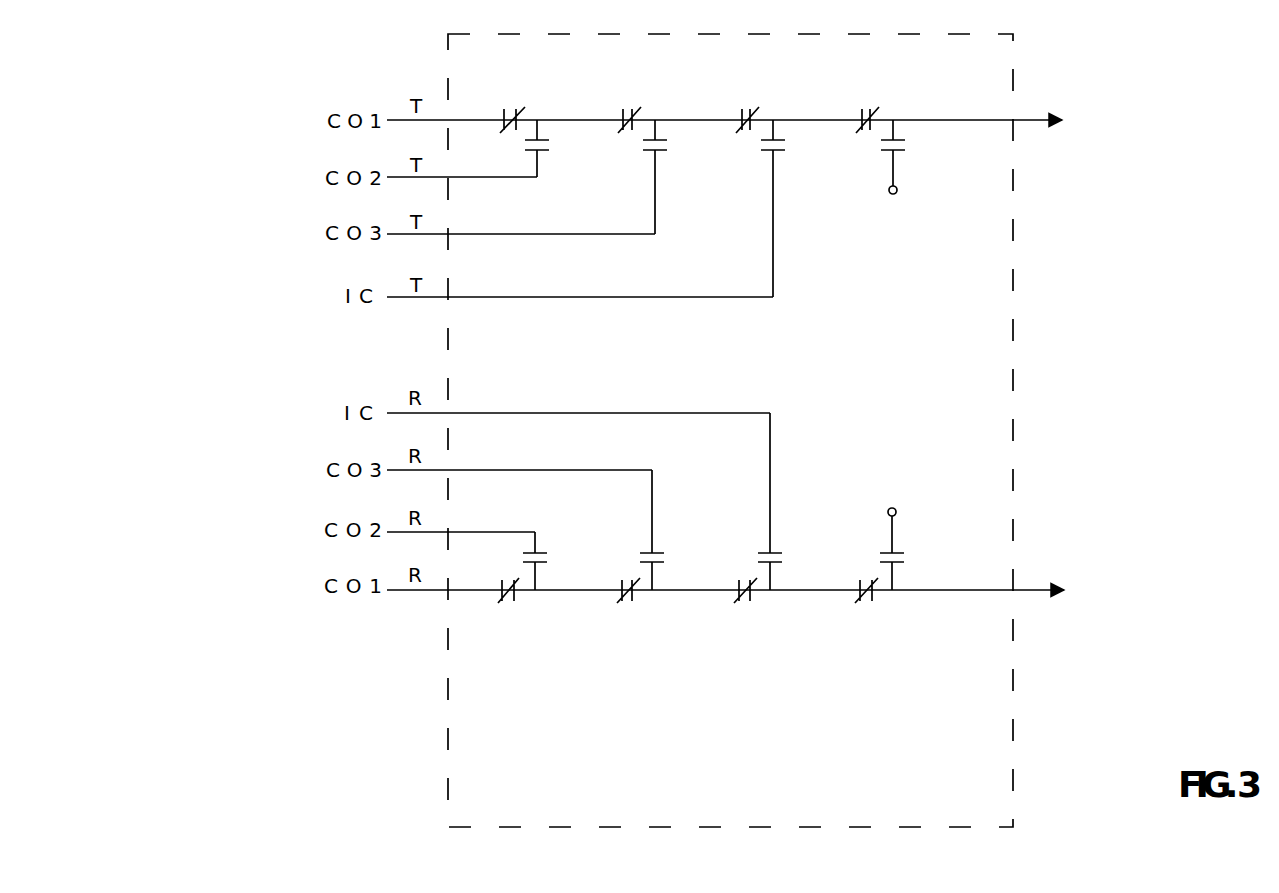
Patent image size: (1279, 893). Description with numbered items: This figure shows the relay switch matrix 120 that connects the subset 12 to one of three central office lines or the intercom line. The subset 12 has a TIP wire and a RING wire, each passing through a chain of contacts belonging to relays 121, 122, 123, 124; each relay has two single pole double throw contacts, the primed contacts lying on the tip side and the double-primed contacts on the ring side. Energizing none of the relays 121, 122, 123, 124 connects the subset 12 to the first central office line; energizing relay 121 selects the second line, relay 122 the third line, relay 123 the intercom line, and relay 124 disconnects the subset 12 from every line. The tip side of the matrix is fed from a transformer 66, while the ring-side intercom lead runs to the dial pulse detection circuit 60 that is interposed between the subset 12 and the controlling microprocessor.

The subset 12 is at (1139, 347).
The dial pulse detection circuit 60 is at (326, 419).
The transformer 66 is at (325, 294).
The switch matrix 120 is at (766, 745).
The relay 121 is at (504, 355).
The relay 122 is at (621, 355).
The relay 123 is at (741, 355).
The relay 124 is at (862, 355).